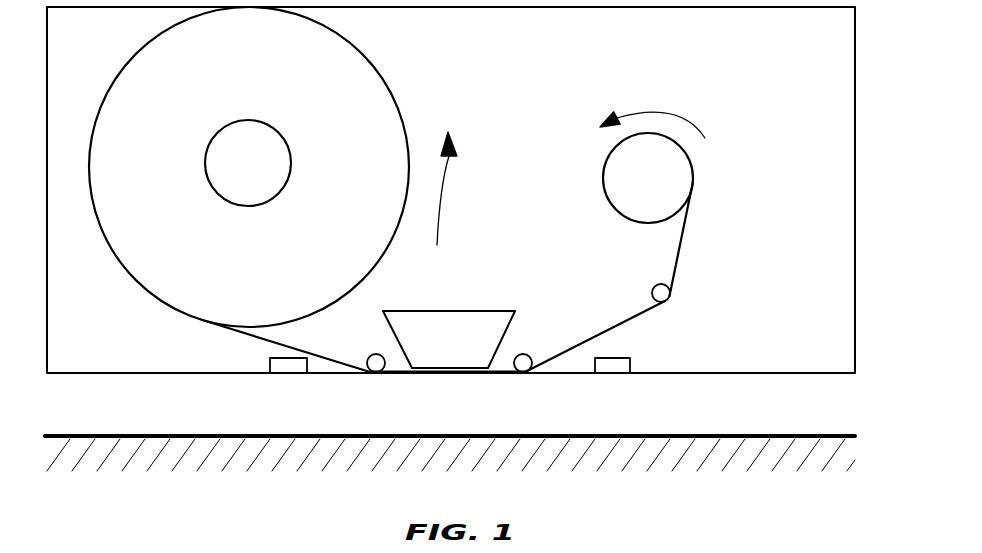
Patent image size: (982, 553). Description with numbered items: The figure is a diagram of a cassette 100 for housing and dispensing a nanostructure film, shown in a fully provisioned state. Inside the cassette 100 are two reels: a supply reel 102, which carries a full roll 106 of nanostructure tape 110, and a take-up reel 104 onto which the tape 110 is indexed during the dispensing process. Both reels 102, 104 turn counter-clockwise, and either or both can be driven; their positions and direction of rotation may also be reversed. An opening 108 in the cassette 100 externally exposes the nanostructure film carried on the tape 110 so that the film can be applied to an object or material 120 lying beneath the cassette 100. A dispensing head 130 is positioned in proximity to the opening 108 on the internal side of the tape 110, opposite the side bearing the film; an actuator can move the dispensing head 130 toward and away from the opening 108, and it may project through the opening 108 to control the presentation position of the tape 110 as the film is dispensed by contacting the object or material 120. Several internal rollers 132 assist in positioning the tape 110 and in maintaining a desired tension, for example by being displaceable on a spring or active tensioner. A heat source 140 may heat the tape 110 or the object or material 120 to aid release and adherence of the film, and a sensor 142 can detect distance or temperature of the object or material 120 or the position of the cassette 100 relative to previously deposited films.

The cassette 100 is at (118, 374).
The supply reel 102 is at (262, 119).
The take-up reel 104 is at (608, 158).
The full roll 106 is at (385, 78).
The opening 108 is at (452, 391).
The nanostructure tape 110 is at (282, 340).
The object or material 120 is at (697, 436).
The dispensing head 130 is at (473, 310).
The internal rollers 132 is at (370, 353).
The heat source 140 is at (268, 360).
The sensor 142 is at (632, 357).